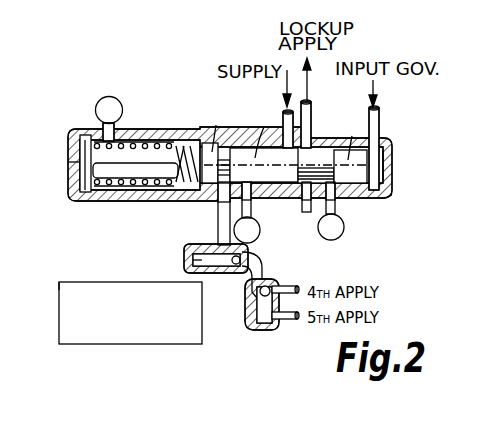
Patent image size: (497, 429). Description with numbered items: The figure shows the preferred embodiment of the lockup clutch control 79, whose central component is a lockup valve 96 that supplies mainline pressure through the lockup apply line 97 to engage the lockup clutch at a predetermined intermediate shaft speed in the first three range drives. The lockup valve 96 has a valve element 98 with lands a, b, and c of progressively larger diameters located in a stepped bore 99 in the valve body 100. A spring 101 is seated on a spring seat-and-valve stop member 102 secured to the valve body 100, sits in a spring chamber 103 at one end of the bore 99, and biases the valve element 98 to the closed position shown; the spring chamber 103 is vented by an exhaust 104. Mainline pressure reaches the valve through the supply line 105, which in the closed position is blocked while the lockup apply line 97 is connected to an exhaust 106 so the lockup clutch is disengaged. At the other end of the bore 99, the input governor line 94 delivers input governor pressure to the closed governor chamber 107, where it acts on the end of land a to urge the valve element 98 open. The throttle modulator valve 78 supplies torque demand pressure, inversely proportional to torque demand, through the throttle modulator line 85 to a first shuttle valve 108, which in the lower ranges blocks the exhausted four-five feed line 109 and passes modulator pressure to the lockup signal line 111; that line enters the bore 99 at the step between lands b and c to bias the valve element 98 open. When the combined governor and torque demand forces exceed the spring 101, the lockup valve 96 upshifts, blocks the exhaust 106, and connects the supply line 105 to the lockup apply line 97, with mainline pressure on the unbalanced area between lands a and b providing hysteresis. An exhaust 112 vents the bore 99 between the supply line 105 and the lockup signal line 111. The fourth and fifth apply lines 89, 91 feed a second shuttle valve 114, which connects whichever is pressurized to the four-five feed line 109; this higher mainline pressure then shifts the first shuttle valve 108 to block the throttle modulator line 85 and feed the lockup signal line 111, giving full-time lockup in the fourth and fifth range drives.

The throttle modulator valve 78 is at (62, 303).
The lockup clutch control 79 is at (63, 257).
The throttle modulator line 85 is at (193, 266).
The 4th apply line 89 is at (290, 285).
The 5th apply line 91 is at (281, 328).
The input governor line 94 is at (380, 125).
The lockup valve 96 is at (130, 206).
The lockup apply line 97 is at (311, 120).
The valve element 98 is at (318, 134).
The stepped bore 99 is at (306, 200).
The valve body 100 is at (388, 193).
The spring 101 is at (128, 147).
The spring seat-and-valve stop member 102 is at (80, 158).
The spring chamber 103 is at (75, 190).
The exhaust 104 is at (95, 107).
The supply line 105 is at (281, 124).
The exhaust 106 is at (345, 219).
The governor chamber 107 is at (384, 148).
The 1st shuttle valve 108 is at (198, 247).
The 4-5 feed line 109 is at (240, 312).
The lockup signal line 111 is at (225, 210).
The exhaust 112 is at (261, 223).
The 2nd shuttle valve 114 is at (280, 281).